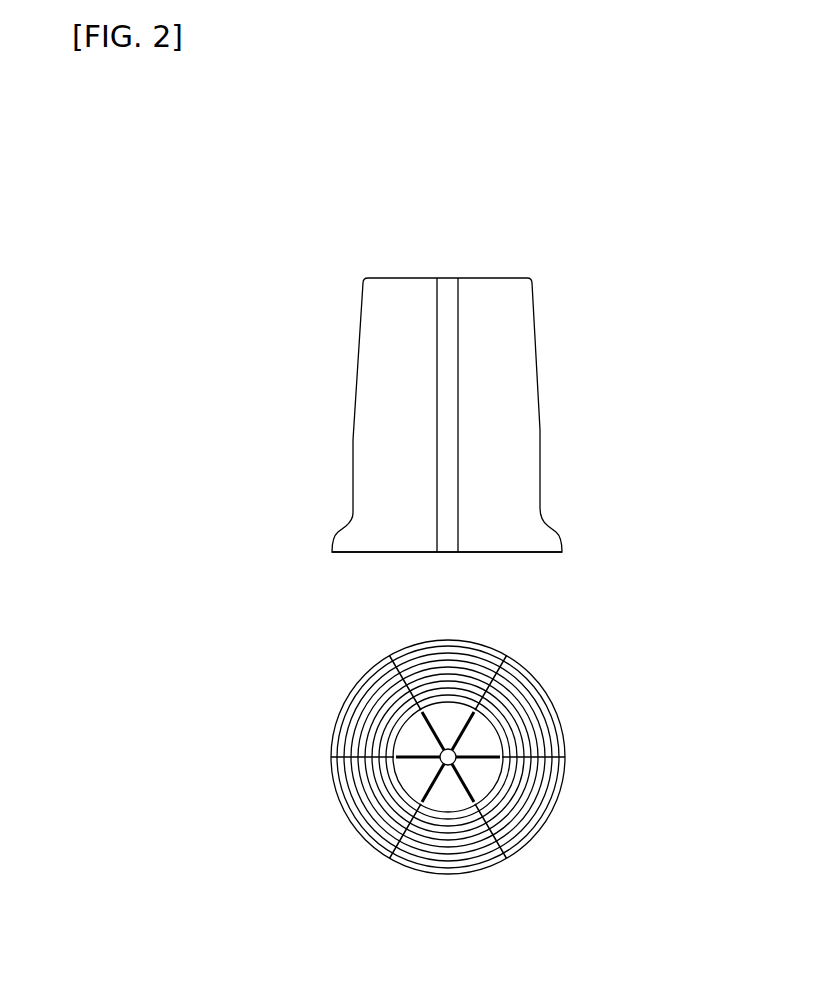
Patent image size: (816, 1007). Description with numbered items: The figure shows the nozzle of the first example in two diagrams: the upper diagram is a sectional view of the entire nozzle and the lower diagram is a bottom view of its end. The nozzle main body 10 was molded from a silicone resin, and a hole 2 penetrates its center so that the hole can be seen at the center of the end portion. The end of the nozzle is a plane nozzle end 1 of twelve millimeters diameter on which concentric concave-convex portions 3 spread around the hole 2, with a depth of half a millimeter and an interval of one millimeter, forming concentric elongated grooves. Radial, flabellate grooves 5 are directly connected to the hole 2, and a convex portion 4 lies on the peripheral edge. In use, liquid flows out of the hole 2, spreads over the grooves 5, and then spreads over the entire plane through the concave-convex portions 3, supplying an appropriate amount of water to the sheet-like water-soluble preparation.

The nozzle end 1 is at (293, 776).
The hole 2 is at (453, 260).
The concave-convex portions 3 is at (536, 826).
The convex portion 4 is at (527, 666).
The grooves 5 is at (484, 749).
The nozzle main body 10 is at (290, 454).